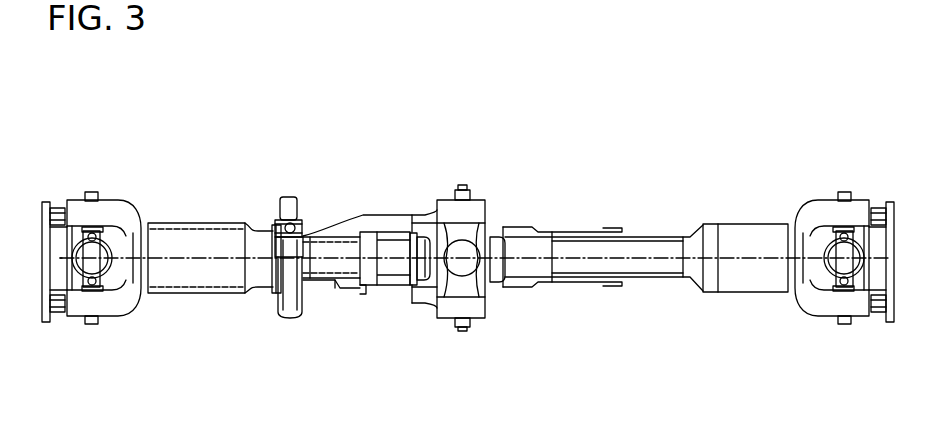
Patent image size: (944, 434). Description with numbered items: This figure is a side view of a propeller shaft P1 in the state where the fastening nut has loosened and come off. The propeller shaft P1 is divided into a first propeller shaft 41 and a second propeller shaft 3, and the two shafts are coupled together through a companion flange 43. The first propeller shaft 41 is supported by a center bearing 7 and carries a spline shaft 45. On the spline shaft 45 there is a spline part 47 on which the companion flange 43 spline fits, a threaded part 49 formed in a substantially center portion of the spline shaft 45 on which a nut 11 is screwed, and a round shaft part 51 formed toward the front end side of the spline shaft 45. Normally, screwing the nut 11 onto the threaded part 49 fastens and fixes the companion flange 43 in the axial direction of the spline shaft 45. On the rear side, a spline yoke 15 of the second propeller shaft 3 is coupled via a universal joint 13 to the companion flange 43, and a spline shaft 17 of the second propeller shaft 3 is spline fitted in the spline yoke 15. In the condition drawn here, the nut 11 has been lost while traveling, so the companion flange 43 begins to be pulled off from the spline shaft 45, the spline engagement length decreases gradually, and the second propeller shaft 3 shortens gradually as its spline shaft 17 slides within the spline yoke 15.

The propeller shaft P1 is at (253, 157).
The second propeller shaft 3 is at (745, 230).
The center bearing 7 is at (292, 198).
The nut 11 is at (427, 300).
The universal joint 13 is at (465, 213).
The spline yoke of second propeller shaft 15 is at (553, 235).
The spline shaft of second propeller shaft 17 is at (586, 268).
The first propeller shaft 41 is at (192, 228).
The companion flange 43 is at (390, 222).
The spline shaft of the first propeller shaft 45 is at (346, 280).
The spline part 47 is at (335, 246).
The threaded part 49 is at (360, 295).
The round shaft part 51 is at (390, 282).